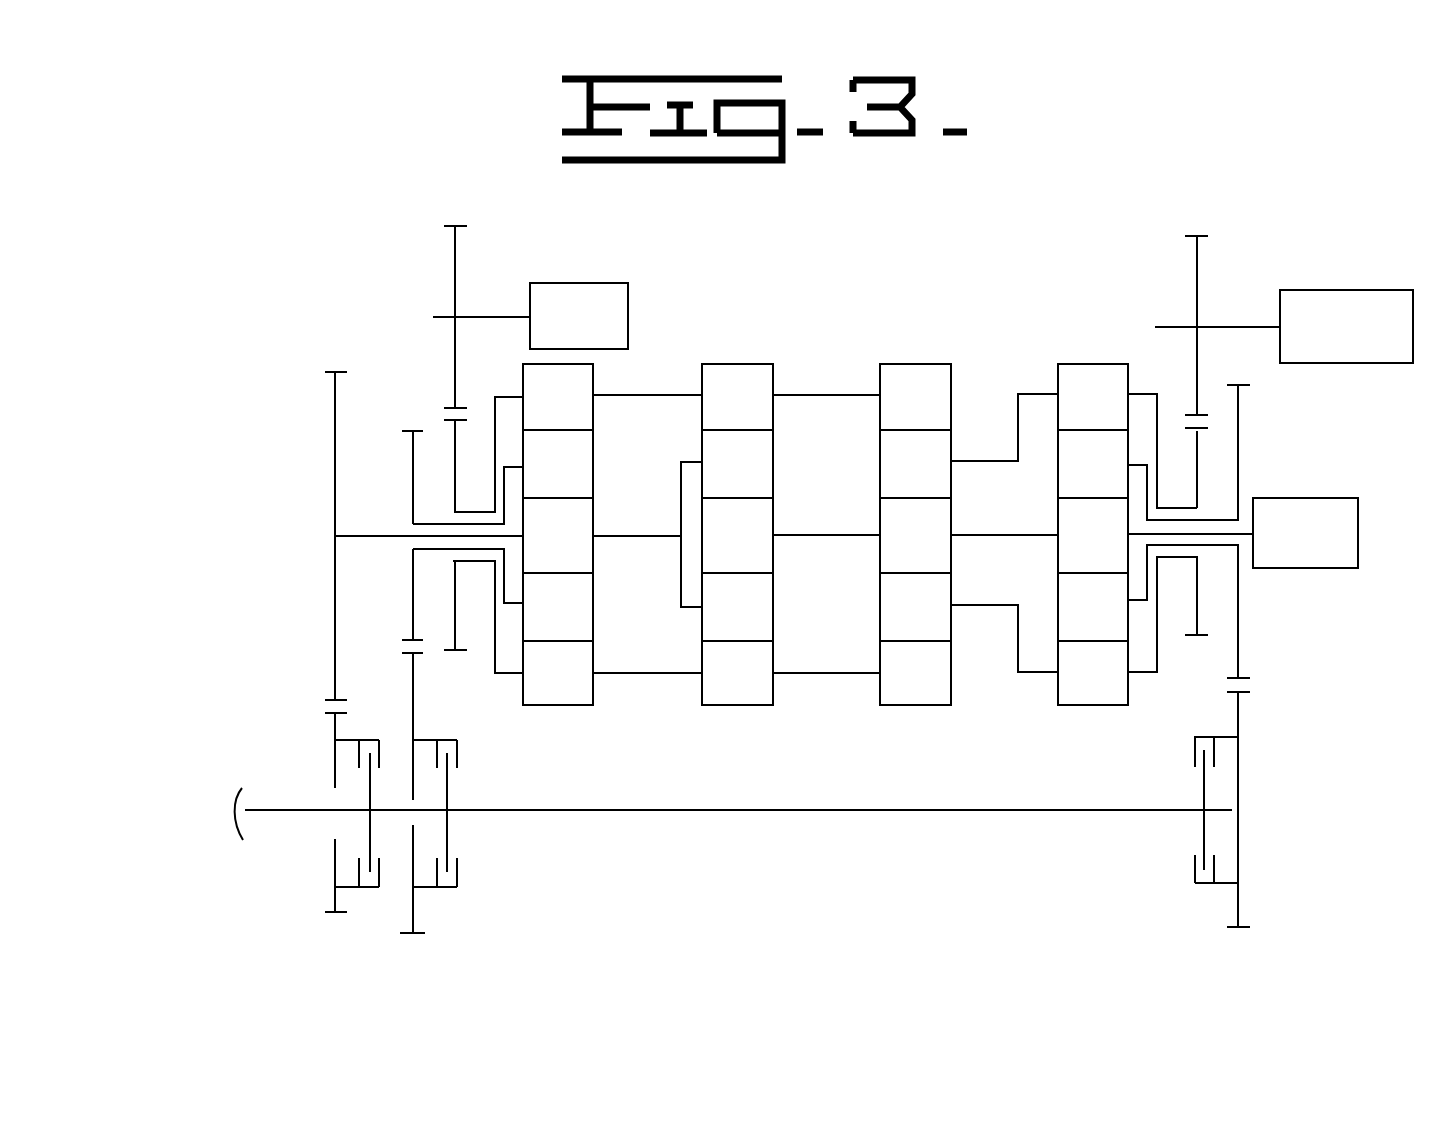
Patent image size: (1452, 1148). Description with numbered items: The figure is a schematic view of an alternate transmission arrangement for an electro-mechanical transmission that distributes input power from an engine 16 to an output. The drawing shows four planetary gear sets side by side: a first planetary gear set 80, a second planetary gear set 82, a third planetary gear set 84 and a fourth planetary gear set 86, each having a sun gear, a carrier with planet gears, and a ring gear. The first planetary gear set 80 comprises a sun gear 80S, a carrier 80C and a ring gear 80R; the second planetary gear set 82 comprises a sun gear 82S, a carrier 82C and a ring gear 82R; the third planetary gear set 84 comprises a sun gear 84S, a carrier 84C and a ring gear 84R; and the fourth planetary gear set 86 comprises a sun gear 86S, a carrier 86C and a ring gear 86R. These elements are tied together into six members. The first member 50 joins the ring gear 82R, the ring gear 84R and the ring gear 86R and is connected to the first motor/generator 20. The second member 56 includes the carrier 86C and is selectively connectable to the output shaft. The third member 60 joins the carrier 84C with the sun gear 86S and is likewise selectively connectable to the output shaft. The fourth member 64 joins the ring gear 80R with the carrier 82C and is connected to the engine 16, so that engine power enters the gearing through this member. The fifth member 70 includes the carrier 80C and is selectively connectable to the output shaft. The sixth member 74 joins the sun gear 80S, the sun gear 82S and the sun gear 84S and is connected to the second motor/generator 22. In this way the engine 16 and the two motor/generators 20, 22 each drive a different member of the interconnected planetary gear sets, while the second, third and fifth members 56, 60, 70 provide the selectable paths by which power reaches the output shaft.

The engine 16 is at (1350, 290).
The first motor/generator 20 is at (605, 283).
The second motor/generator 22 is at (1312, 498).
The first member 50 is at (838, 393).
The second member 56 is at (513, 604).
The third member 60 is at (690, 462).
The fourth member 64 is at (1130, 394).
The fifth member 70 is at (1205, 520).
The sixth member 74 is at (1243, 535).
The first planetary gear set 80 is at (1102, 708).
The sun gear 80S is at (1057, 510).
The carrier 80C is at (1055, 595).
The ring gear 80R is at (1057, 702).
The second planetary gear set 82 is at (912, 710).
The sun gear 82S is at (951, 497).
The carrier 82C is at (951, 580).
The ring gear 82R is at (951, 680).
The third planetary gear set 84 is at (733, 710).
The sun gear 84S is at (773, 553).
The carrier 84C is at (773, 610).
The ring gear 84R is at (773, 694).
The fourth planetary gear set 86 is at (562, 710).
The sun gear 86S is at (593, 552).
The carrier 86C is at (593, 620).
The ring gear 86R is at (593, 695).